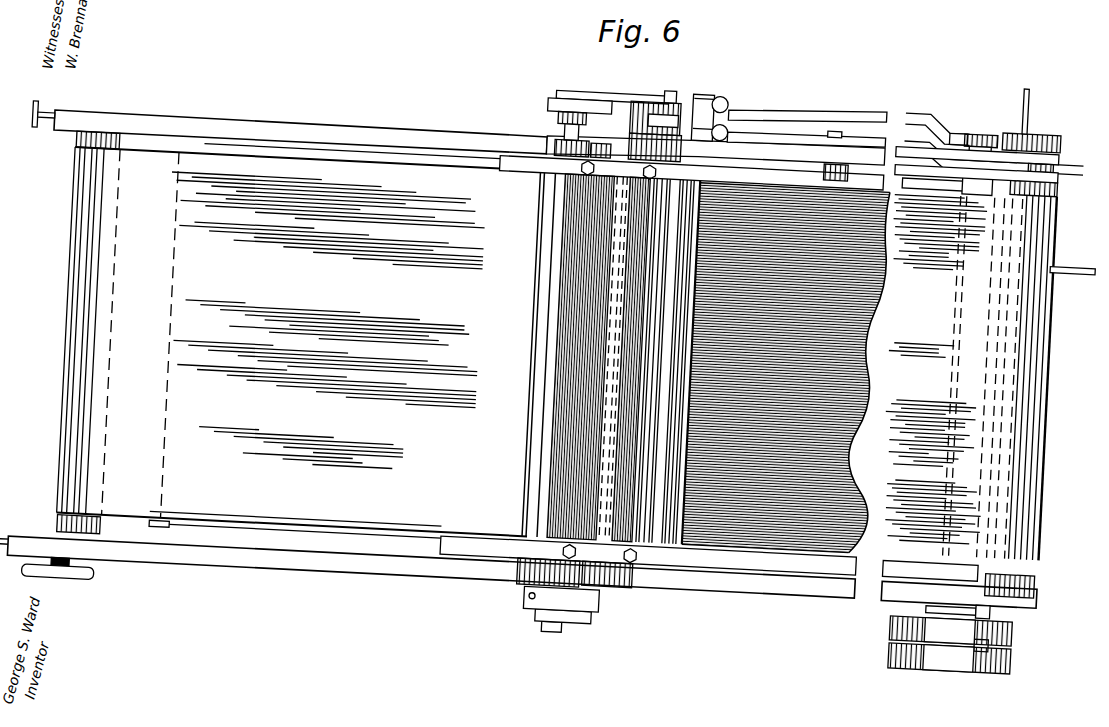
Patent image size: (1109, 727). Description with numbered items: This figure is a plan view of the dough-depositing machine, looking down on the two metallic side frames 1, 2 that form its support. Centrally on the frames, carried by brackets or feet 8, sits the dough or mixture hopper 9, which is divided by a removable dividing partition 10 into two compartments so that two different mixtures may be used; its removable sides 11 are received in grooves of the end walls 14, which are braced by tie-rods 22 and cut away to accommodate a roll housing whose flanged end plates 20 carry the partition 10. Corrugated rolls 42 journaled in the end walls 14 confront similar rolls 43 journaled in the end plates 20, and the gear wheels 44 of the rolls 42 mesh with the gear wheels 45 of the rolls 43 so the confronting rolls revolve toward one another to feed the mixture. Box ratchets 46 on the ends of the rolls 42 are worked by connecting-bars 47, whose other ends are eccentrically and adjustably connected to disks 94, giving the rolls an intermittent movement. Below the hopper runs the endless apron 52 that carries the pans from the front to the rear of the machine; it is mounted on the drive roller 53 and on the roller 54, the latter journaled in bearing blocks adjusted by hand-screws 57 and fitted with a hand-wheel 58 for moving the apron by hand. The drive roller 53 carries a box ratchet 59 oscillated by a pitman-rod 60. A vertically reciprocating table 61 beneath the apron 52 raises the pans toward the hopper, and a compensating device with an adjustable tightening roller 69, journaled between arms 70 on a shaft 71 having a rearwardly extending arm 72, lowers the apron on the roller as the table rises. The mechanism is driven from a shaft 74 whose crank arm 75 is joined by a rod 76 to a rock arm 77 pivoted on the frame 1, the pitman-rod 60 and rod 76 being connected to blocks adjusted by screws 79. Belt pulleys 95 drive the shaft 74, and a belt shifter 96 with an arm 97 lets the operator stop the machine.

The side frame 1 is at (314, 568).
The side frame 2 is at (350, 129).
The brackets or feet 8 is at (546, 140).
The dough or mixture hopper 9 is at (532, 355).
The dividing partition 10 is at (600, 352).
The sides 11 is at (538, 222).
The end walls 14 is at (534, 178).
The end plates 20 is at (674, 94).
The tie-rods 22 is at (546, 254).
The corrugated rolls 42 is at (560, 394).
The rolls 43 is at (560, 469).
The gear wheels 44 is at (740, 114).
The gear wheels 45 is at (698, 106).
The box ratchets 46 is at (728, 96).
The connecting-bars 47 is at (640, 94).
The endless apron 52 is at (400, 377).
The roller 53 is at (1048, 192).
The roller 54 is at (130, 134).
The hand-screws 57 is at (40, 116).
The hand-wheel 58 is at (90, 576).
The box ratchet 59 is at (1030, 142).
The pitman-rod 60 is at (818, 128).
The vertically reciprocating table 61 is at (180, 542).
The tightening roller 69 is at (948, 300).
The arms 70 is at (941, 186).
The shaft 71 is at (846, 160).
The rearwardly extending arm 72 is at (767, 374).
The shaft 74 is at (948, 606).
The crank arm 75 is at (976, 128).
The rod 76 is at (868, 110).
The rock arm 77 is at (716, 90).
The screws 79 is at (744, 96).
The disks 94 is at (606, 96).
The belt pulleys 95 is at (888, 626).
The belt shifter 96 is at (1006, 622).
The arm 97 is at (1082, 276).